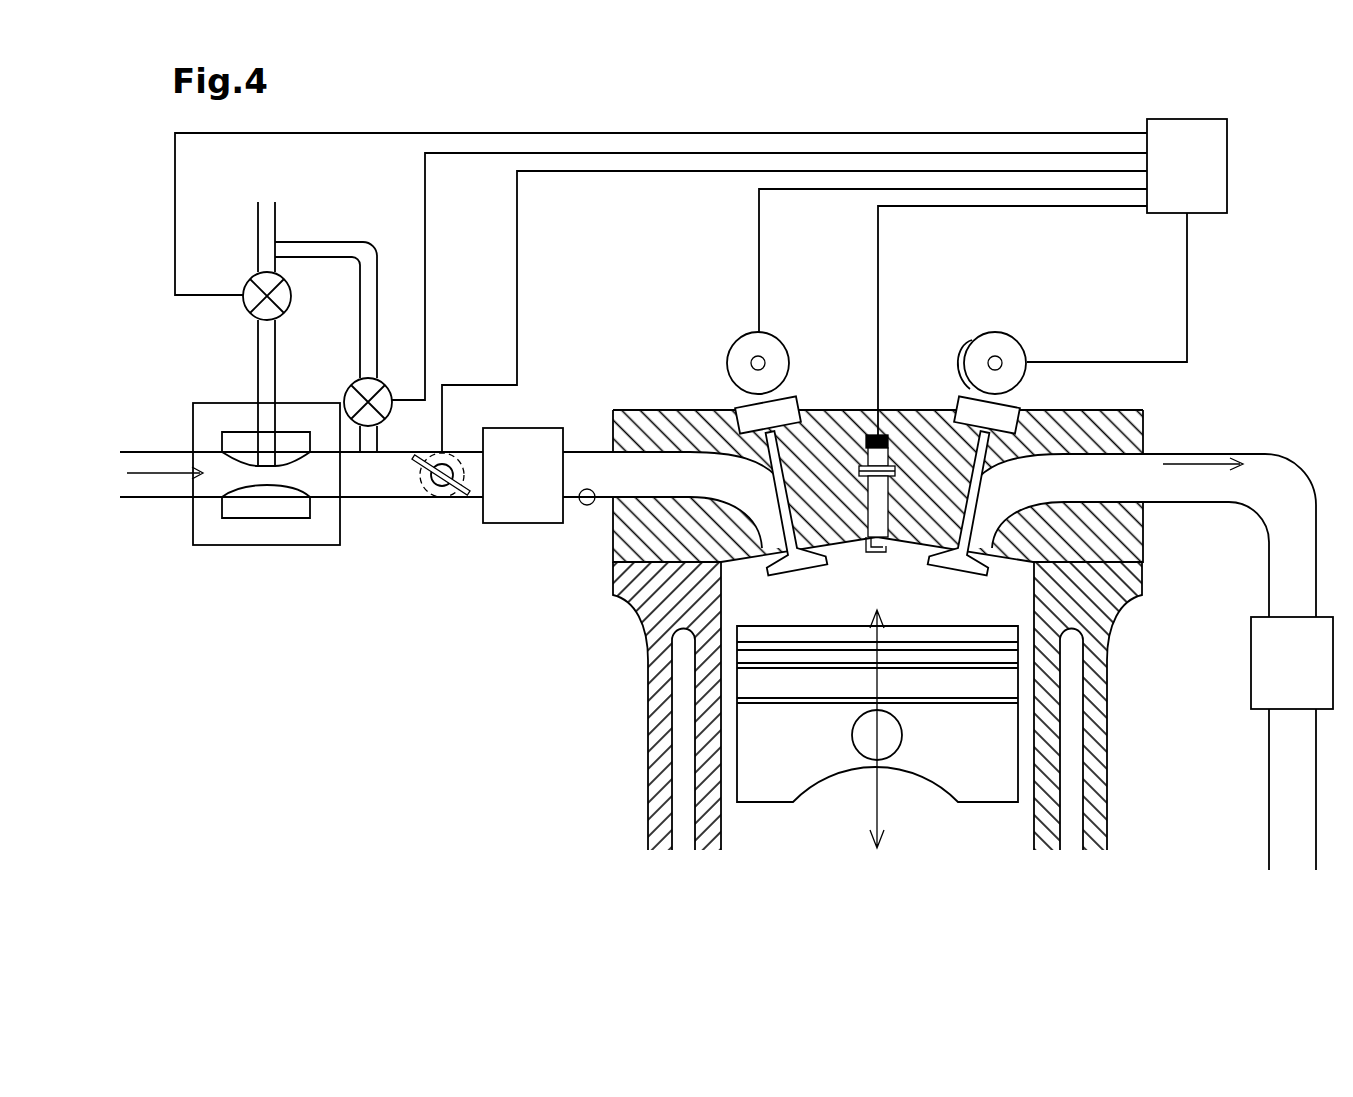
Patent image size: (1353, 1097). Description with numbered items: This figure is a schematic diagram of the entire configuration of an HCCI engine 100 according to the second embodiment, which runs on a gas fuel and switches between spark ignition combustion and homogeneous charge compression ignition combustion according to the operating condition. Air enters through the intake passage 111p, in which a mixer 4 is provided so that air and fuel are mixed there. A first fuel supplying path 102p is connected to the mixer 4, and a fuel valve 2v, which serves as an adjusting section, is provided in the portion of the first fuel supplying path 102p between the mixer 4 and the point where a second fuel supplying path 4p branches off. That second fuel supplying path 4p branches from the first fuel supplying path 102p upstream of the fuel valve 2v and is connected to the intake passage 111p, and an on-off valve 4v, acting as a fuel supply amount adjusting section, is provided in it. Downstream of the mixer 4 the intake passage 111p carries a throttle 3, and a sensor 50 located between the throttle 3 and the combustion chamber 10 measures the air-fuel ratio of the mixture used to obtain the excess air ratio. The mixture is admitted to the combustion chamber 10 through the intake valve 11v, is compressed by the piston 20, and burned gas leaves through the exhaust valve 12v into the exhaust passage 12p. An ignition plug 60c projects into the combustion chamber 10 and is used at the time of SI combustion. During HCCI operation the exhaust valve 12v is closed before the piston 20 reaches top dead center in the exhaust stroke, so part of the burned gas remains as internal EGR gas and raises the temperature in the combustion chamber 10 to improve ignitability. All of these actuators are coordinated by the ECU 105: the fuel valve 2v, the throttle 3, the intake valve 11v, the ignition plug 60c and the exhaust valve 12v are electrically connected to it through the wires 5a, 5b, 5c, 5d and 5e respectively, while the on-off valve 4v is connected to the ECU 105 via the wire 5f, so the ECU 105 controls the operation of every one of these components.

The HCCI engine 100 is at (1278, 137).
The ECU 105 is at (1174, 178).
The wire 5a is at (1043, 134).
The wire 5b is at (628, 175).
The wire 5c is at (810, 190).
The wire 5d is at (948, 207).
The wire 5e is at (1187, 298).
The wire 5f is at (492, 155).
The first fuel supplying path 102p is at (257, 233).
The fuel valve 2v is at (242, 293).
The second fuel supplying path 4p is at (303, 245).
The on-off valve 4v is at (388, 381).
The mixer 4 is at (215, 545).
The intake passage 111p is at (138, 452).
The throttle 3 is at (414, 517).
The sensor 50 is at (585, 505).
The combustion chamber 10 is at (765, 610).
The intake valve 11v is at (797, 567).
The exhaust valve 12v is at (958, 542).
The ignition plug 60c is at (880, 528).
The piston 20 is at (987, 722).
The exhaust passage 12p is at (1165, 455).